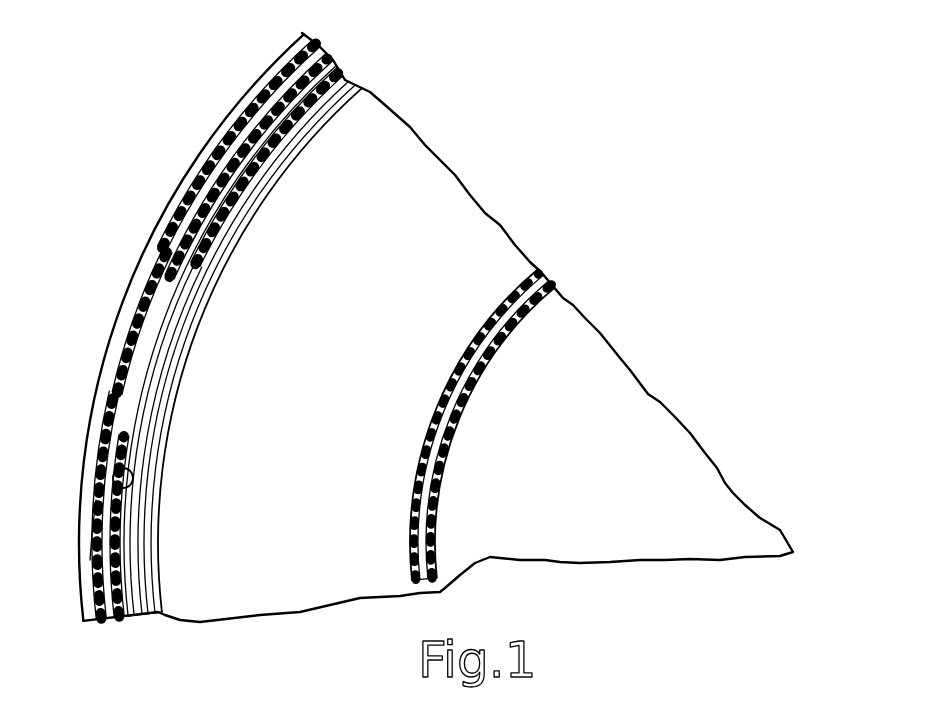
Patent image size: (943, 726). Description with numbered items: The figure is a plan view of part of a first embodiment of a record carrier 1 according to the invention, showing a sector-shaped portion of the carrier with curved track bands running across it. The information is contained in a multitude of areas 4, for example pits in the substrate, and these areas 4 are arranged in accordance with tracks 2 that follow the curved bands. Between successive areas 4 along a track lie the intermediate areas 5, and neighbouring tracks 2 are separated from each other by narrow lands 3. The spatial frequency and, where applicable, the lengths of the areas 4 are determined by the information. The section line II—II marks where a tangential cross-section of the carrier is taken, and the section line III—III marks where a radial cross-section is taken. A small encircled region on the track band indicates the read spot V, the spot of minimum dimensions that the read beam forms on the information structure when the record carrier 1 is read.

The record carrier 1 is at (511, 199).
The tracks 2 is at (305, 52).
The narrow lands 3 is at (128, 616).
The areas 4 is at (277, 177).
The intermediate areas 5 is at (232, 248).
The line II— II is at (68, 340).
The line III— III is at (110, 96).
The read spot V is at (133, 478).